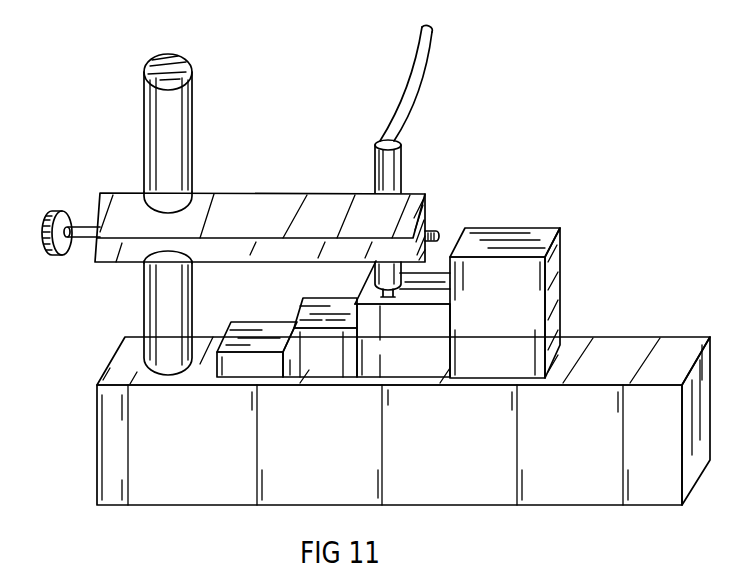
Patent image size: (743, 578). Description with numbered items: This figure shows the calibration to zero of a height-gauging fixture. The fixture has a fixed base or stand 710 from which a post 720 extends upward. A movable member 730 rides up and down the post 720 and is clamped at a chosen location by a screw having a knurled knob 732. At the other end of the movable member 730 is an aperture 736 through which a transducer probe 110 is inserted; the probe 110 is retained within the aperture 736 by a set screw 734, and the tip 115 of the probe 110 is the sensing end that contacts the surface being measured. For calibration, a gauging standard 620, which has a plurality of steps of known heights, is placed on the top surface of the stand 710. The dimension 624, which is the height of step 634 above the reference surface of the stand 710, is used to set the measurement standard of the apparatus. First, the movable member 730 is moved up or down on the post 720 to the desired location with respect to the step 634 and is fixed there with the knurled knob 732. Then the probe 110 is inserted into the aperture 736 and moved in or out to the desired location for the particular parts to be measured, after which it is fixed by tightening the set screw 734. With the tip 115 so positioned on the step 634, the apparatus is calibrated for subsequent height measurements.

The transducer probe 110 is at (385, 175).
The tip 115 is at (380, 293).
The gauging standard 620 is at (560, 278).
The height 624 is at (417, 306).
The step 634 is at (427, 297).
The fixed base 710 is at (97, 437).
The post 720 is at (174, 74).
The movable member 730 is at (262, 204).
The knurled knob 732 is at (62, 211).
The set screw 734 is at (437, 232).
The aperture 736 is at (376, 194).